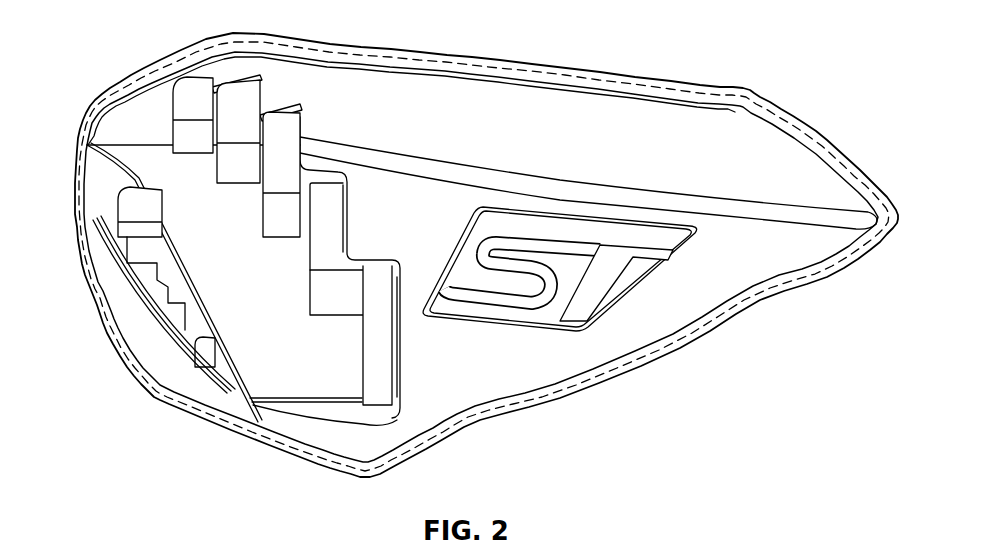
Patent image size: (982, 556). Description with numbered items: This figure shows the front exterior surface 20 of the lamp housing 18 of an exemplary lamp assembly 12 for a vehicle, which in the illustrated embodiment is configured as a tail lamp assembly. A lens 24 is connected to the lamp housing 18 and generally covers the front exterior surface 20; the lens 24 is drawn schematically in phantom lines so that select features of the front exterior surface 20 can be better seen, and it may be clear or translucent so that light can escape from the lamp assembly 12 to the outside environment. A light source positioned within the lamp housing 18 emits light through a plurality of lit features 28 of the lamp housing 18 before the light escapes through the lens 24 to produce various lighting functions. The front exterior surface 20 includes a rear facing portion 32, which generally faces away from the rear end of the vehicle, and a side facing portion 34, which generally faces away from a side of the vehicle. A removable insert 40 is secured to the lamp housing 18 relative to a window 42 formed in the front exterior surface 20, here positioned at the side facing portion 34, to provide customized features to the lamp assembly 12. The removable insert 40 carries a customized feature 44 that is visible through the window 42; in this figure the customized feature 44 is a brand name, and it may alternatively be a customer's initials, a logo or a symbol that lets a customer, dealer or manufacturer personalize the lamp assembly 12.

The lamp assembly 12 is at (722, 32).
The lamp housing 18 is at (745, 92).
The front exterior surface 20 is at (527, 116).
The lens 24 is at (812, 274).
The lit features 28 is at (200, 152).
The rear facing portion 32 is at (122, 150).
The side facing portion 34 is at (718, 310).
The removable insert 40 is at (648, 261).
The window 42 is at (632, 290).
The customized feature 44 is at (570, 226).